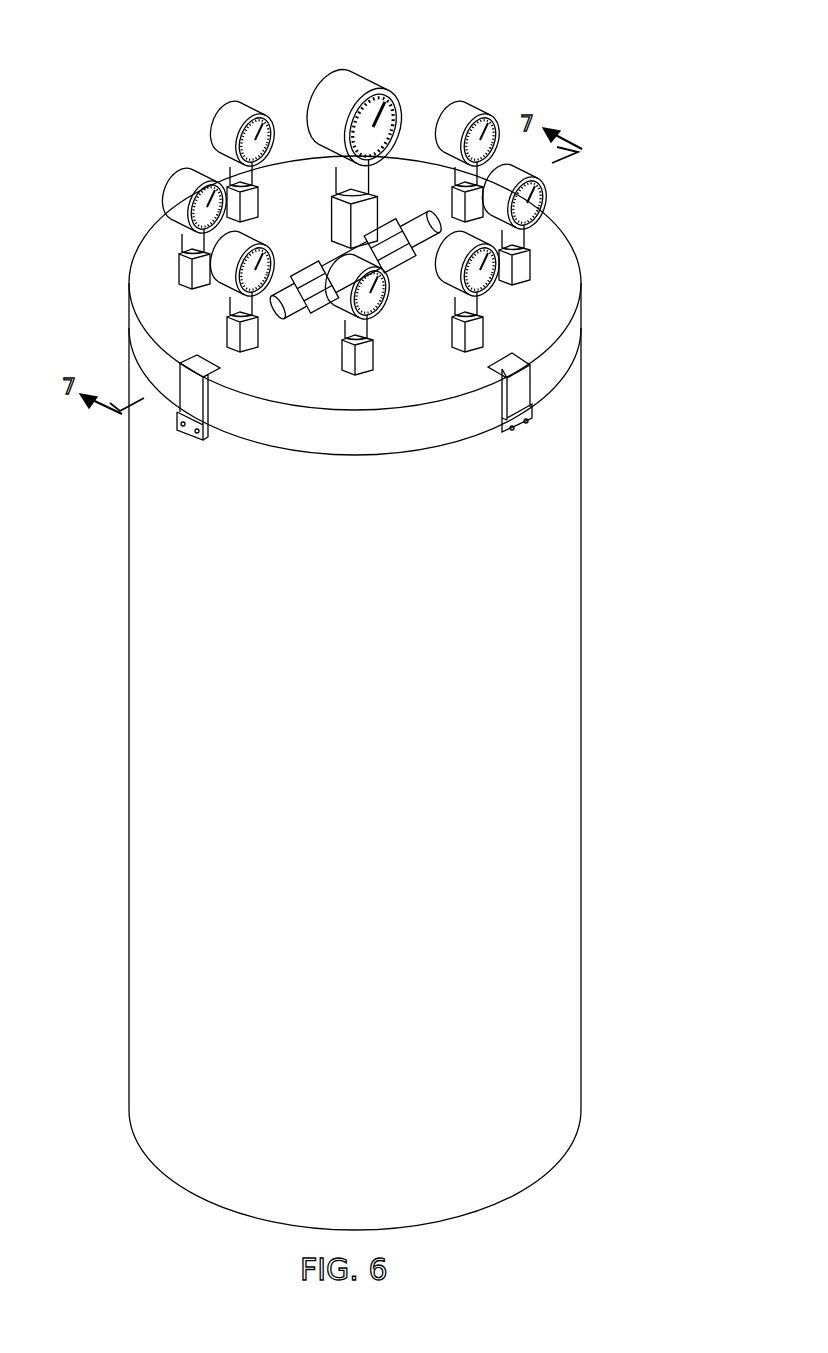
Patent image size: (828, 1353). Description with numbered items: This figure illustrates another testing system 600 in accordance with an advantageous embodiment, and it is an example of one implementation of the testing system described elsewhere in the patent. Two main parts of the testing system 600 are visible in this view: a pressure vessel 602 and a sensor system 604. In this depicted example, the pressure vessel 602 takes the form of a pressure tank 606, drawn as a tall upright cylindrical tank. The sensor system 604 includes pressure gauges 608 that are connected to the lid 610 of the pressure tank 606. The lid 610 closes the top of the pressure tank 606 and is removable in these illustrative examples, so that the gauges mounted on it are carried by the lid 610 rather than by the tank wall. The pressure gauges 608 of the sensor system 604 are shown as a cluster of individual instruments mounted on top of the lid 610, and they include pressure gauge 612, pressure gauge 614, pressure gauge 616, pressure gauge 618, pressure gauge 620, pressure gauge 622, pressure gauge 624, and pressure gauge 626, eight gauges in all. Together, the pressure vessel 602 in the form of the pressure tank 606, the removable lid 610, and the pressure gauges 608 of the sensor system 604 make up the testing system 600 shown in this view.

The testing system 600 is at (590, 478).
The pressure vessel 602 is at (573, 722).
The sensor system 604 is at (438, 84).
The pressure tank 606 is at (573, 816).
The pressure gauges 608 is at (380, 66).
The lid 610 is at (560, 258).
The pressure gauge 612 is at (347, 132).
The pressure gauge 614 is at (232, 103).
The pressure gauge 616 is at (166, 178).
The pressure gauge 618 is at (290, 222).
The pressure gauge 620 is at (332, 314).
The pressure gauge 622 is at (436, 302).
The pressure gauge 624 is at (548, 198).
The pressure gauge 626 is at (484, 106).